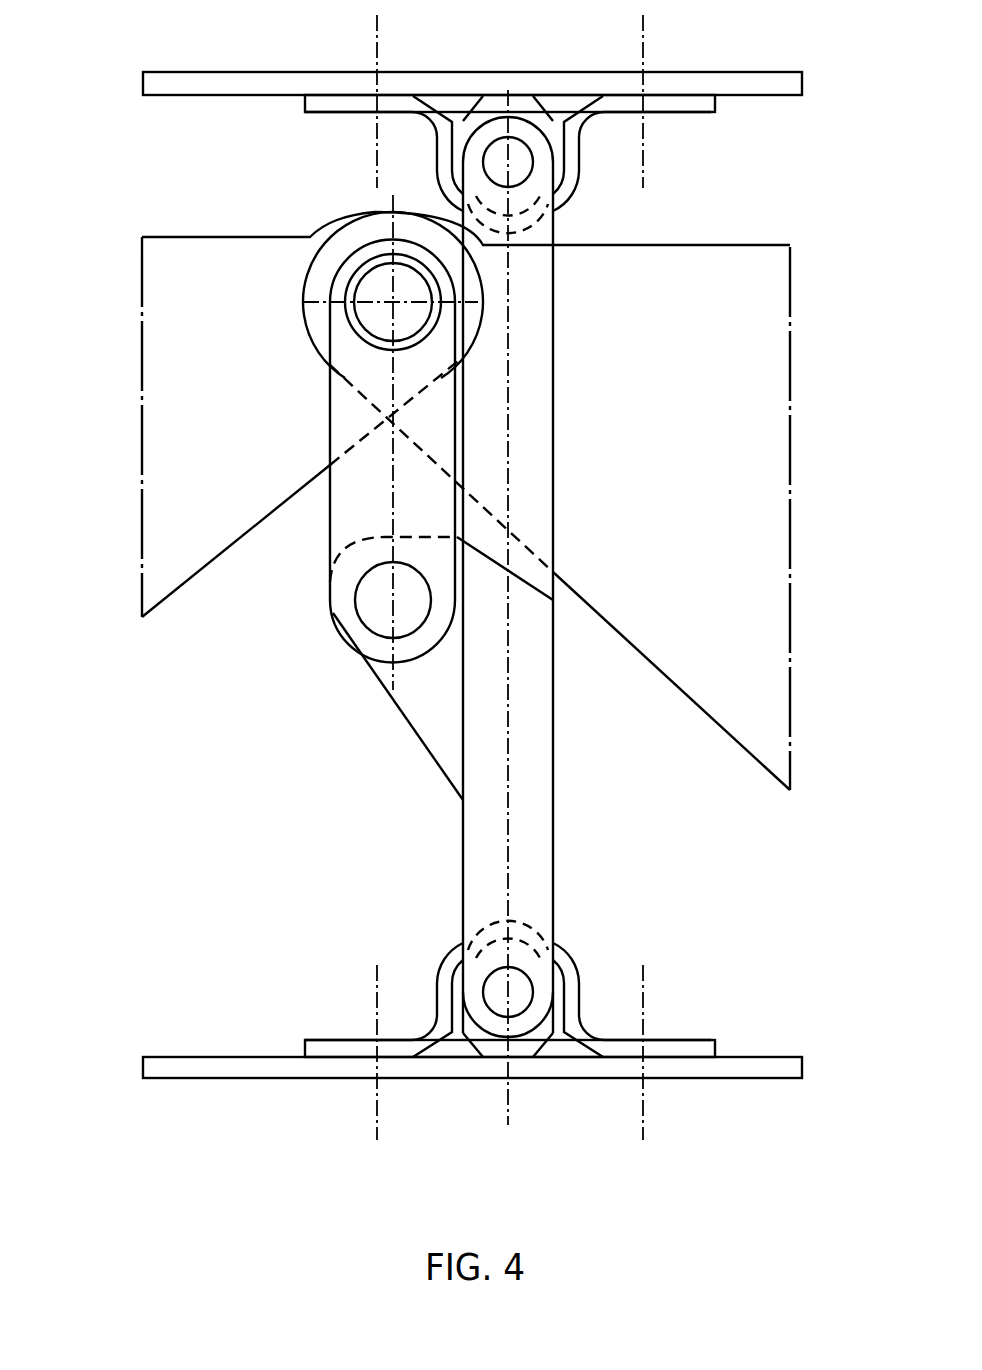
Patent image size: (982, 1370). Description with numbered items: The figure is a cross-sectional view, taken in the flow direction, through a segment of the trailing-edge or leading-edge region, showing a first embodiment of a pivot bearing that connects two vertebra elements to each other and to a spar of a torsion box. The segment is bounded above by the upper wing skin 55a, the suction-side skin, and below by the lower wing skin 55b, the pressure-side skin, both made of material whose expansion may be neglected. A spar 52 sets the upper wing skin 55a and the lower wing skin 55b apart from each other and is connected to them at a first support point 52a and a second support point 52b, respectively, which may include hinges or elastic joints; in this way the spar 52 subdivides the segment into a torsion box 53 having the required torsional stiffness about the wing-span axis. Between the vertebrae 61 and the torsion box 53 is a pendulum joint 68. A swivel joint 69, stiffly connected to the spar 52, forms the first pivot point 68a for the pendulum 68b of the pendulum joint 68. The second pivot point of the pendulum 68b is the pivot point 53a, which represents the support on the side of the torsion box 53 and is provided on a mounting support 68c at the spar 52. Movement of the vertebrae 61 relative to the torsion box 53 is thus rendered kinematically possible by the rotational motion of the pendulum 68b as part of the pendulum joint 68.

The spar 52 is at (525, 576).
The first support point 52a is at (600, 165).
The second support point 52b is at (578, 953).
The torsion box 53 is at (306, 584).
The pivot point 53a is at (392, 600).
The upper wing skin 55a is at (460, 84).
The lower wing skin 55b is at (242, 1070).
The vertebra 61 is at (163, 460).
The pendulum joint 68 is at (315, 521).
The first pivot point 68a is at (331, 332).
The pendulum 68b is at (337, 505).
The mounting support 68c is at (427, 727).
The swivel joint 69 is at (363, 355).